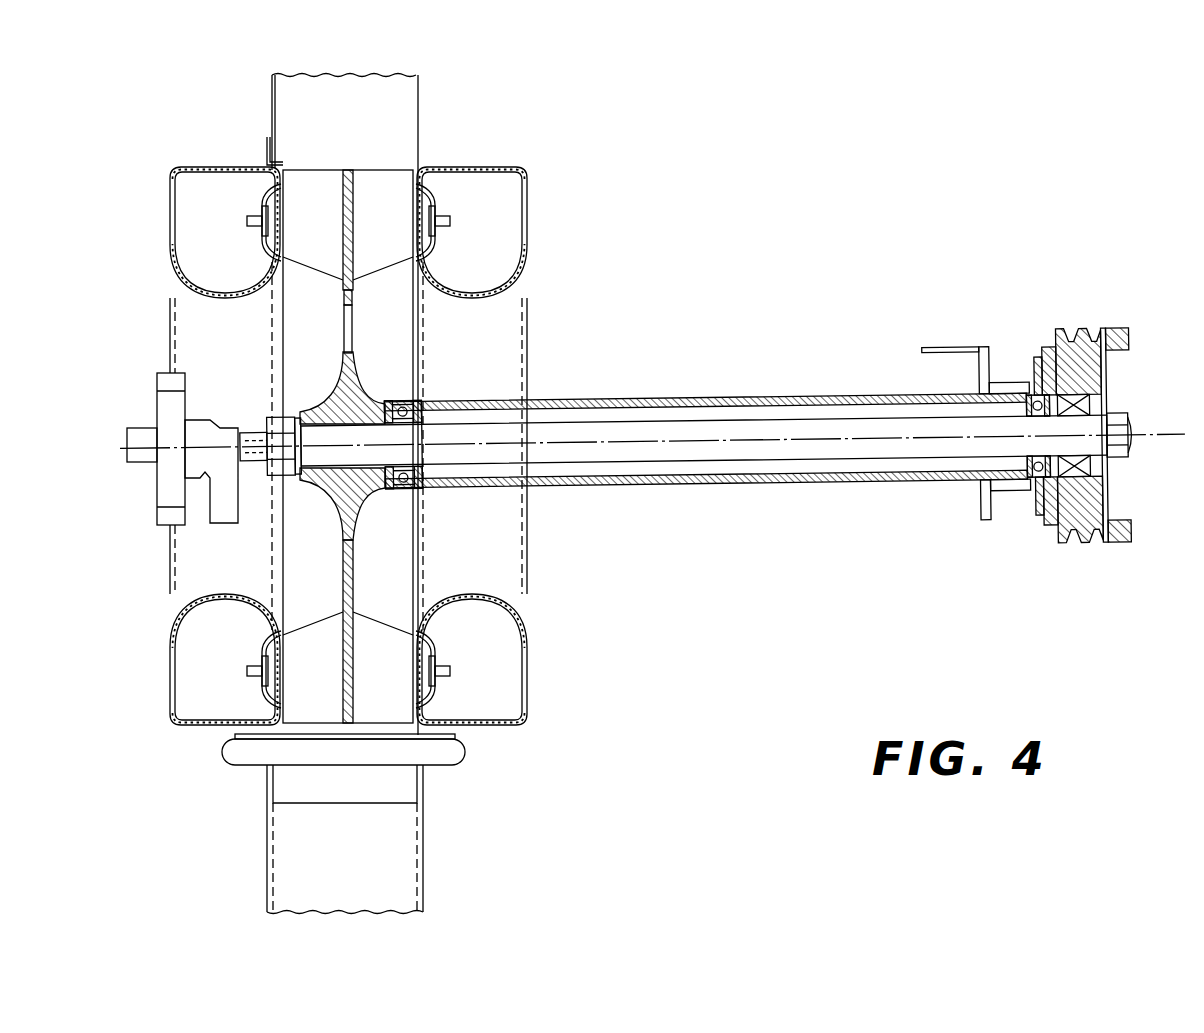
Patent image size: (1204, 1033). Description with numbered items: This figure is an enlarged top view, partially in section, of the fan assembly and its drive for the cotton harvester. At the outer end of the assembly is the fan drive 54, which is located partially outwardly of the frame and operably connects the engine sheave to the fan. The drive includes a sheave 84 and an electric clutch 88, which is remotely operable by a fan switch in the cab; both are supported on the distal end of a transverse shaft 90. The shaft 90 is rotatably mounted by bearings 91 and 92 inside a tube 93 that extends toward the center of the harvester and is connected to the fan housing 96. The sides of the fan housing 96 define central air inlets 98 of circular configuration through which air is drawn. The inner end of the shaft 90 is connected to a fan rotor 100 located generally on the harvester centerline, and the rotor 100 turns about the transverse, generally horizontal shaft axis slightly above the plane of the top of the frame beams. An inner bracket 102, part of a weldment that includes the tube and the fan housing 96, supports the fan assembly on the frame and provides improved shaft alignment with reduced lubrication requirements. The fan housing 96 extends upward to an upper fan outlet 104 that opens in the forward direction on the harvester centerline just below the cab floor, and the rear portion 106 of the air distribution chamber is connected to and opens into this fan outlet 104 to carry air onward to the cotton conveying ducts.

The fan drive 54 is at (1089, 387).
The sheave 84 is at (1097, 330).
The electric clutch 88 is at (1090, 467).
The transverse shaft 90 is at (738, 452).
The bearing 91 is at (1027, 468).
The bearing 92 is at (393, 401).
The tube 93 is at (810, 396).
The fan housing 96 is at (528, 620).
The central air inlets 98 is at (152, 309).
The fan rotor 100 is at (325, 170).
The inner bracket 102 is at (955, 347).
The upper fan outlet 104 is at (315, 728).
The rear portion 106 is at (423, 850).